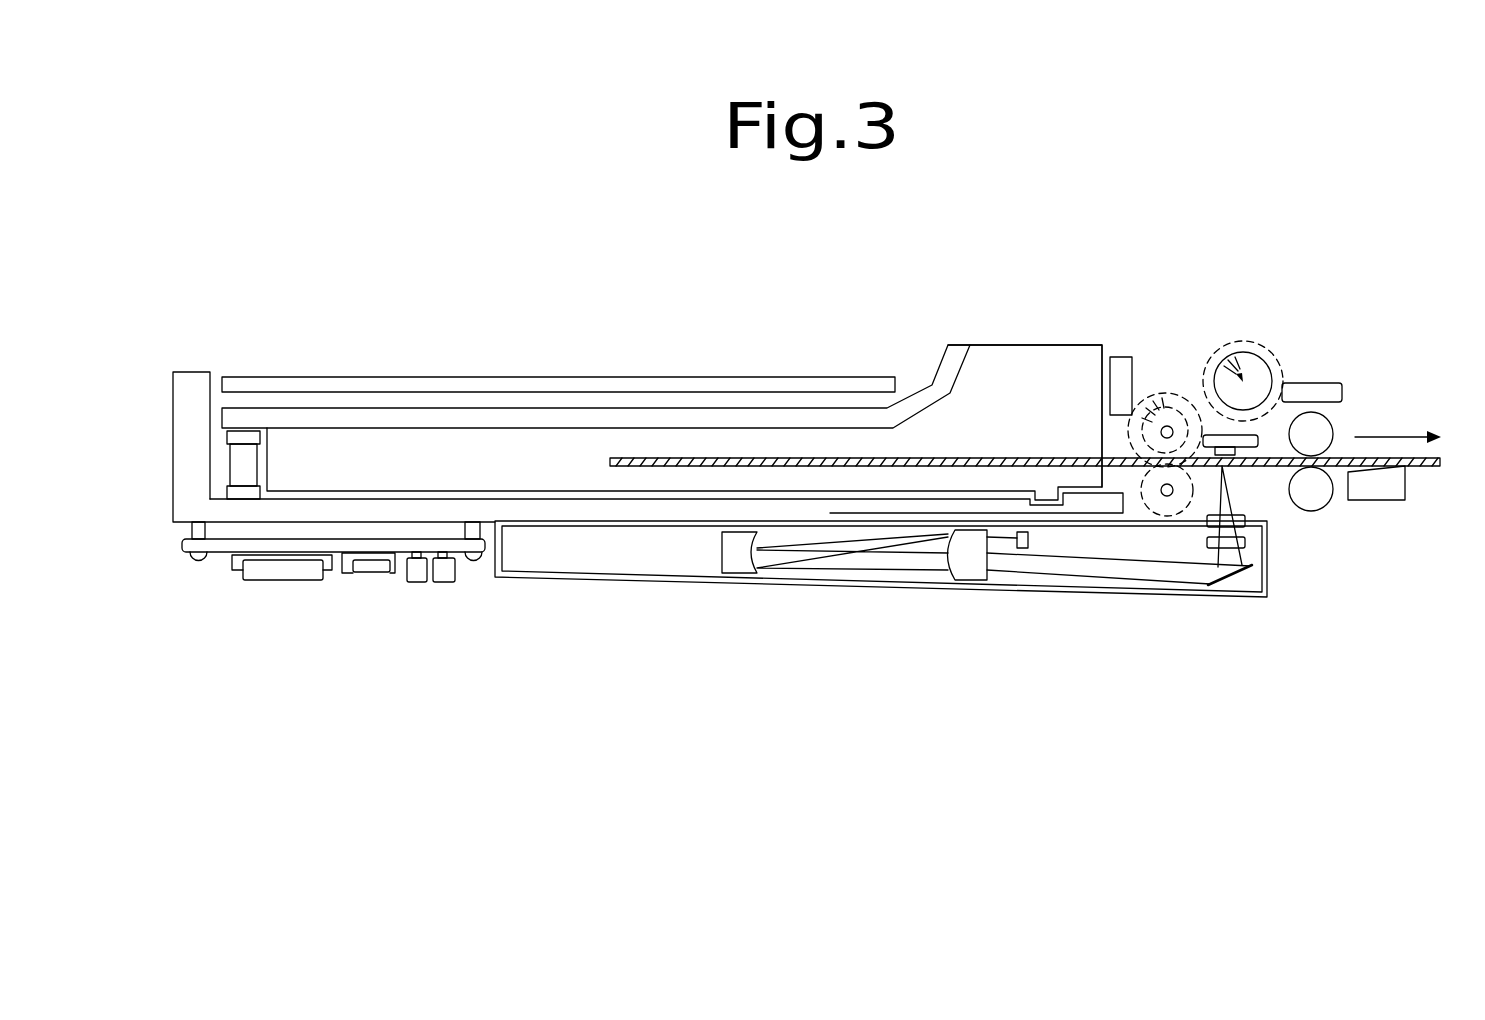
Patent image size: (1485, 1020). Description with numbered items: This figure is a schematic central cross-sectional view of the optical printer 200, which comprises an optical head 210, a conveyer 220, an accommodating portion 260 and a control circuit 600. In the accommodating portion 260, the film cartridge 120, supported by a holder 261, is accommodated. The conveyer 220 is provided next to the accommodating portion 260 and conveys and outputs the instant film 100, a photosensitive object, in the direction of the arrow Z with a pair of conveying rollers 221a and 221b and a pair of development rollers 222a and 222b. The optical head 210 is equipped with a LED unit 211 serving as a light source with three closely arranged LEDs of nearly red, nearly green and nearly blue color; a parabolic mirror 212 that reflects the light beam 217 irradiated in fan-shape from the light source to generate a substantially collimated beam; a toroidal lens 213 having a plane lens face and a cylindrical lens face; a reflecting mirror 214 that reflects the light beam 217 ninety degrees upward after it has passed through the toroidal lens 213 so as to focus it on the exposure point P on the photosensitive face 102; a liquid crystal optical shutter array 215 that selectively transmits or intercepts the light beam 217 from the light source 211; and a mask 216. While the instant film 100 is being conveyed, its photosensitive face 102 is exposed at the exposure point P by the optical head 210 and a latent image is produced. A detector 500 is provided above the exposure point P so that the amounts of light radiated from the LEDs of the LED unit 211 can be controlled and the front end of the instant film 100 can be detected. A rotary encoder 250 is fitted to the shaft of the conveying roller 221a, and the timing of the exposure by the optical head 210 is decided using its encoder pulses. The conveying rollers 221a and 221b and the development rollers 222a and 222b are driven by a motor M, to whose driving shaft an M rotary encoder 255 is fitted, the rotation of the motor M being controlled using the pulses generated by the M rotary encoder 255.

The instant film 100 is at (1431, 468).
The photosensitive face 102 is at (1273, 467).
The film cartridge 120 is at (1010, 344).
The optical printer 200 is at (1340, 275).
The optical head 210 is at (773, 584).
The LED unit 211 is at (1028, 540).
The parabolic mirror 212 is at (720, 556).
The toroidal lens 213 is at (968, 582).
The reflecting mirror 214 is at (1262, 583).
The liquid crystal optical shutter array 215 is at (1265, 542).
The mask 216 is at (1247, 512).
The light beam 217 is at (1131, 588).
The conveyer 220 is at (1182, 315).
The conveying roller 221a is at (1175, 410).
The conveying roller 221b is at (1155, 478).
The development roller 222a is at (1333, 418).
The development roller 222b is at (1327, 505).
The rotary encoder 250 is at (1128, 434).
The M rotary encoder 255 is at (1230, 345).
The accommodating portion 260 is at (368, 316).
The holder 261 is at (711, 378).
The detector 500 is at (1240, 437).
The control circuit 600 is at (173, 548).
The motor M is at (1261, 350).
The exposure point P is at (1222, 466).
The conveying direction Z is at (1410, 439).